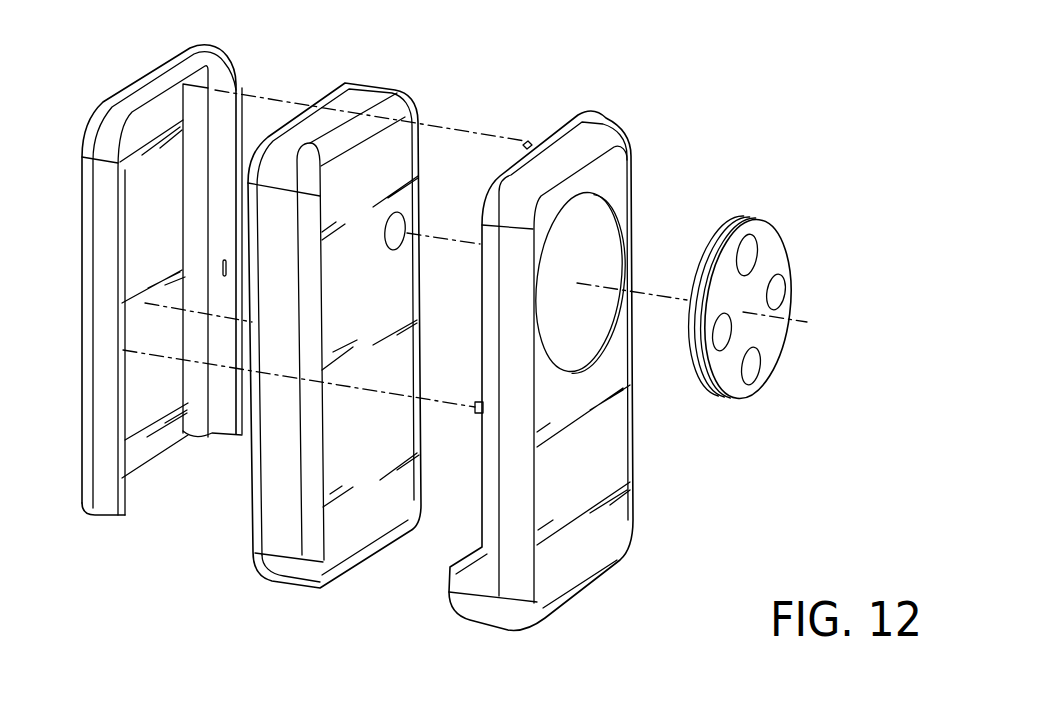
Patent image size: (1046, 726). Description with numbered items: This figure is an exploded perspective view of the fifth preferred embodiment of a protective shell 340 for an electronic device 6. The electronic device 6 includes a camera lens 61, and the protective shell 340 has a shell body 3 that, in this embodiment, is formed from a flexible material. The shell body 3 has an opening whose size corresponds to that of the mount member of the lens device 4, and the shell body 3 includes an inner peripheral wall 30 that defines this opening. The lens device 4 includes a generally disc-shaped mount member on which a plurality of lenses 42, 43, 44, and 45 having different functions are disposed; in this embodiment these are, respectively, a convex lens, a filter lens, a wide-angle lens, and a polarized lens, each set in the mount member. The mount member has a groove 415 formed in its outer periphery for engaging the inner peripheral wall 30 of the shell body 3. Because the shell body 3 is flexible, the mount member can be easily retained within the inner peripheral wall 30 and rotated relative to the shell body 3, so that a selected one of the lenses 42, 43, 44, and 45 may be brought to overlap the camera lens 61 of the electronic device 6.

The electronic device 6 is at (360, 295).
The protective shell 340 is at (599, 334).
The shell body 3 is at (565, 351).
The camera lens 61 is at (397, 218).
The inner peripheral wall 30 is at (620, 250).
The lens device 4 is at (757, 298).
The filter lens 43 is at (745, 247).
The convex lens 42 is at (773, 285).
The wide-angle lens 44 is at (720, 334).
The polarized lens 45 is at (750, 364).
The groove 415 is at (697, 391).